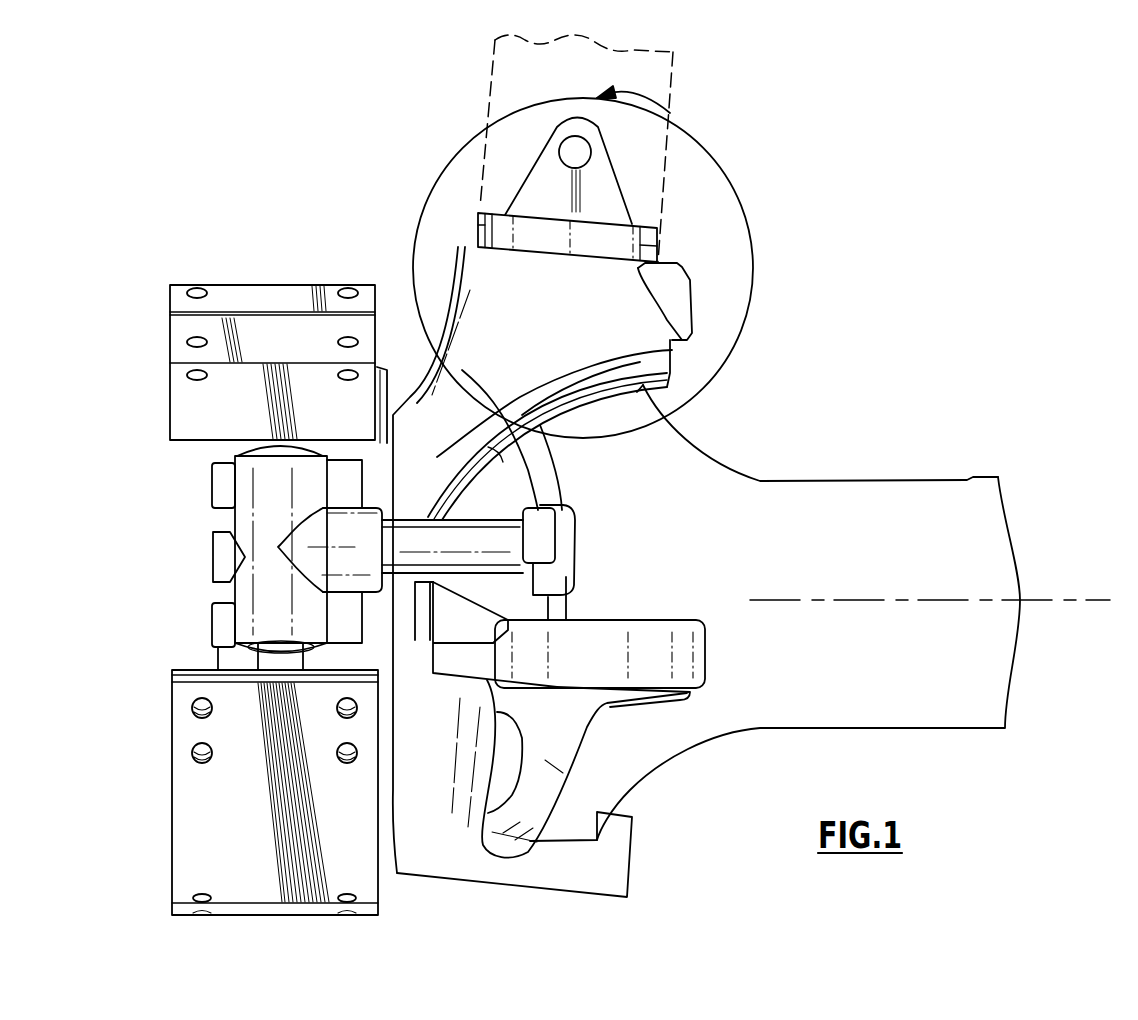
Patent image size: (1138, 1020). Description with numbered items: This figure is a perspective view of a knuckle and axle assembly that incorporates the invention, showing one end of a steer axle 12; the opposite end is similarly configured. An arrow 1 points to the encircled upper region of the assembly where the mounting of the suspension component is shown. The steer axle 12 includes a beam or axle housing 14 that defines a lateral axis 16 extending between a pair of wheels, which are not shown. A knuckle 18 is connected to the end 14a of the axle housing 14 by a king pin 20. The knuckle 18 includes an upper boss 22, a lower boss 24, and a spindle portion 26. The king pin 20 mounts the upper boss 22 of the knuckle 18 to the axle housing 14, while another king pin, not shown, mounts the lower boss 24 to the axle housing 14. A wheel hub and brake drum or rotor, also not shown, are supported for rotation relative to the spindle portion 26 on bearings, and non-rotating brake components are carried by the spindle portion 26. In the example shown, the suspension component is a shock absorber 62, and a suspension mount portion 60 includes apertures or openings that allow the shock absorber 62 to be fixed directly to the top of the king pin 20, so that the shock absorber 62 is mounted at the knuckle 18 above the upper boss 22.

The direction of rotation arrow 1 is at (583, 250).
The steer axle 12 is at (611, 483).
The axle housing 14 is at (808, 612).
The arm end portion 14a is at (637, 412).
The lateral axis 16 is at (1063, 600).
The knuckle 18 is at (420, 365).
The king pin 20 is at (495, 233).
The upper boss 22 is at (650, 337).
The lower boss 24 is at (443, 867).
The spindle portion 26 is at (395, 477).
The suspension mount portion 60 is at (657, 250).
The shock absorber 62 is at (667, 158).